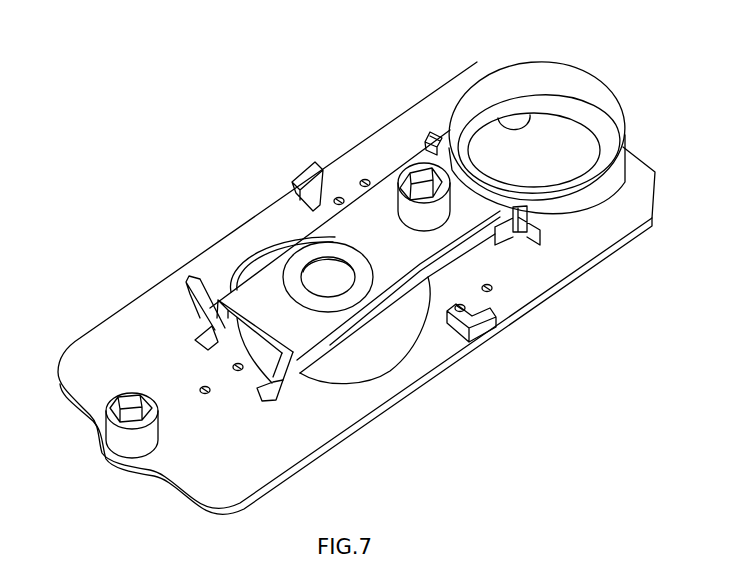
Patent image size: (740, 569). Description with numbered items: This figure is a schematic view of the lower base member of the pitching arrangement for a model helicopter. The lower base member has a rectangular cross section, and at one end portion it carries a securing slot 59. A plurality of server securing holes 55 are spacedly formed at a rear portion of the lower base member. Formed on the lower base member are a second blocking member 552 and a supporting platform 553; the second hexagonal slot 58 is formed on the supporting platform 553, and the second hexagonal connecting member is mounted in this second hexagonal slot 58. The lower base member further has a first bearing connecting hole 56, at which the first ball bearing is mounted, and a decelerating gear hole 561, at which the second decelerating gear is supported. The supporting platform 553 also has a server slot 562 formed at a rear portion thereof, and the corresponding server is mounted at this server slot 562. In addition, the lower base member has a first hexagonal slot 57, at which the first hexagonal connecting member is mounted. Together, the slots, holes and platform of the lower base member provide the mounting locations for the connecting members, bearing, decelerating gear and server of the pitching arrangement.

The server securing holes 55 is at (364, 180).
The first bearing connecting hole 56 is at (333, 262).
The first hexagonal slot 57 is at (135, 410).
The second hexagonal slot 58 is at (423, 178).
The securing slot 59 is at (598, 110).
The second blocking member 552 is at (302, 178).
The supporting platform 553 is at (478, 229).
The decelerating gear hole 561 is at (257, 262).
The server slot 562 is at (186, 284).